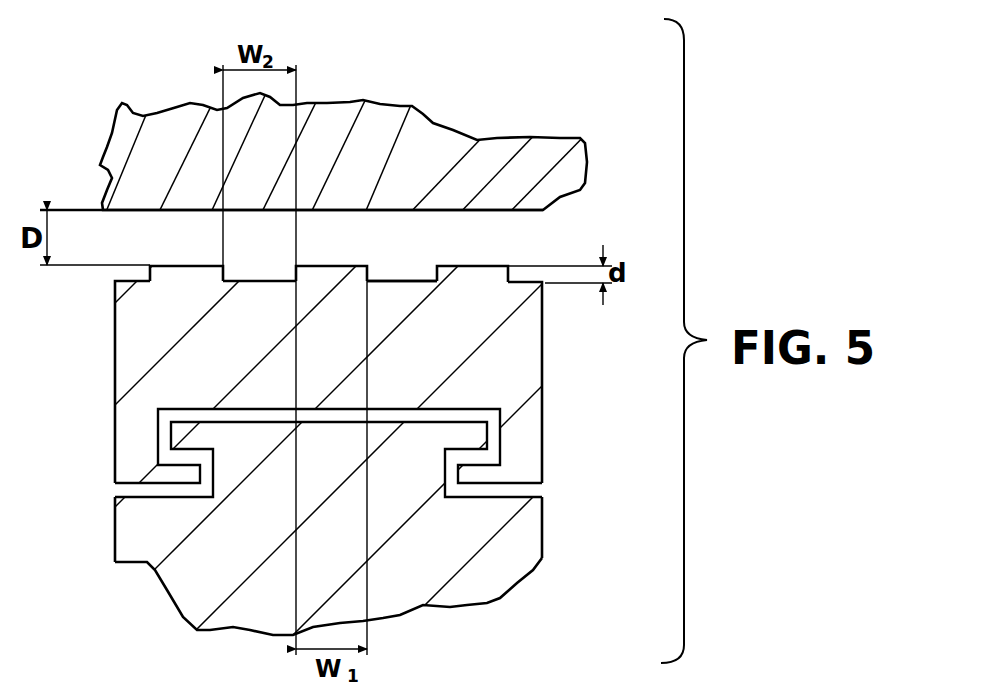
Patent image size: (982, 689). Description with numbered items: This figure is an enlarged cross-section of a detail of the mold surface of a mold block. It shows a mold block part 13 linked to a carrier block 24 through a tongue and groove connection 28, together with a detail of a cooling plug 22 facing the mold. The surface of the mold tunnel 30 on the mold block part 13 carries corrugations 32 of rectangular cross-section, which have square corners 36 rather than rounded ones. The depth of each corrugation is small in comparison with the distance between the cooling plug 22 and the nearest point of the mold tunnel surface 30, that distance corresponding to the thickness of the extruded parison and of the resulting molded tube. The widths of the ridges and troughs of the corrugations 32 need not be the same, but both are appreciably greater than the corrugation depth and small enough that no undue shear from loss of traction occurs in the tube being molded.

The mold block part 13 is at (503, 355).
The cooling plug 22 is at (182, 115).
The carrier block 24 is at (475, 593).
The tongue and groove connection 28 is at (393, 453).
The mold tunnel 30 is at (187, 265).
The corrugations 32 is at (410, 282).
The square corners 36 is at (370, 265).